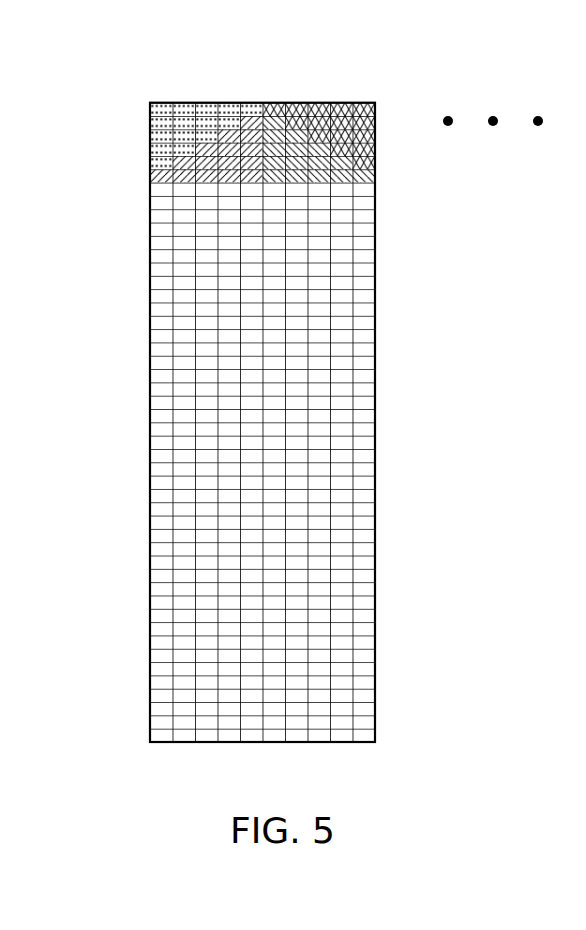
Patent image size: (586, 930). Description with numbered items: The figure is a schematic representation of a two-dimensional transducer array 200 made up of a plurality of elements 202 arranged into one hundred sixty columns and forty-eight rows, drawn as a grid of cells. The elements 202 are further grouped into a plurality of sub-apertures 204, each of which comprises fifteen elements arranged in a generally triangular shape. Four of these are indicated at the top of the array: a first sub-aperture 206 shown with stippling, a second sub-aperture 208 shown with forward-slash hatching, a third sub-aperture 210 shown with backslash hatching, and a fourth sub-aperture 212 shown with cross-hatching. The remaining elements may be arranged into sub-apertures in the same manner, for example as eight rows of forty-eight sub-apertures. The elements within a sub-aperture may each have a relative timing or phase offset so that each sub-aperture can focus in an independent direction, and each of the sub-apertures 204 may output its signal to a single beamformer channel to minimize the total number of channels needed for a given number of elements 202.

The 2D transducer array 200 is at (449, 436).
The elements 202 is at (185, 103).
The sub-apertures 204 is at (158, 185).
The first sub-aperture 206 is at (146, 125).
The second sub-aperture 208 is at (207, 185).
The third sub-aperture 210 is at (301, 185).
The fourth sub-aperture 212 is at (321, 101).